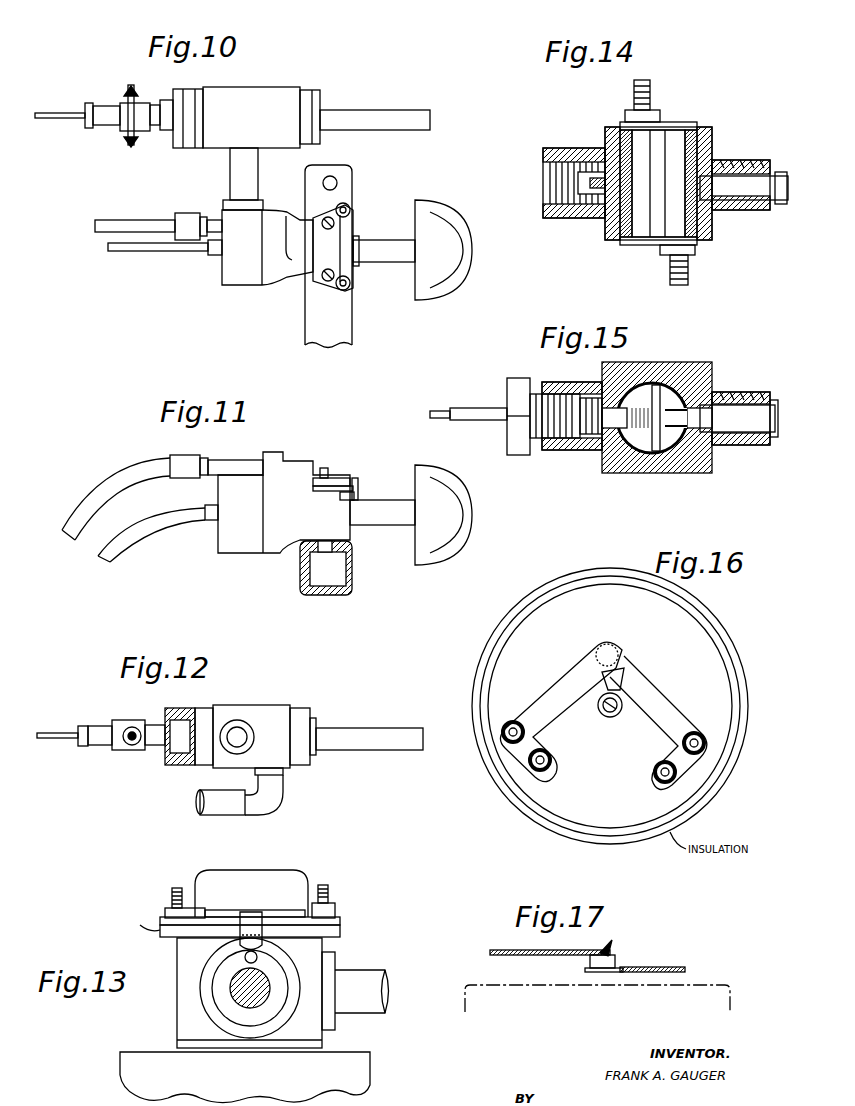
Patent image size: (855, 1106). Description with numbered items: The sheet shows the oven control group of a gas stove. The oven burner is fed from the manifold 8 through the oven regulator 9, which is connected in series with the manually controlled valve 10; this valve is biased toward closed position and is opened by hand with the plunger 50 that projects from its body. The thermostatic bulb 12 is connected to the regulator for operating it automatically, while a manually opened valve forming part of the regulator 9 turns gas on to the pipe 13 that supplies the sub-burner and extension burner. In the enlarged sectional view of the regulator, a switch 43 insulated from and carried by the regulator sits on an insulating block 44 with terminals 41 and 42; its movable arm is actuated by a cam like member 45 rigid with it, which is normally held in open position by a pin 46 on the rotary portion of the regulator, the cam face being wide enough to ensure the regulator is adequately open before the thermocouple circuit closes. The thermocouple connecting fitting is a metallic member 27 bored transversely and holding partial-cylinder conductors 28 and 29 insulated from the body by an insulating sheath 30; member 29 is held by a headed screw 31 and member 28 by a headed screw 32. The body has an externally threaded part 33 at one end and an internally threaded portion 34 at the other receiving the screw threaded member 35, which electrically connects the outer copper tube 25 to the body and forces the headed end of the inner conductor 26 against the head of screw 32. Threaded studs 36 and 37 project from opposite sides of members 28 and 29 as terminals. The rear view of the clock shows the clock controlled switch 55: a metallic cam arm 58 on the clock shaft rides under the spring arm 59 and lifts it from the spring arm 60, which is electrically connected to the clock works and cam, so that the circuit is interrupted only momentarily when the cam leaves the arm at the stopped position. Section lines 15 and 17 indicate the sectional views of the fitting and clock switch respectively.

In FIG. 10, the manifold 8 is at (340, 326).
In FIG. 10, the oven regulator 9 is at (273, 290).
In FIG. 11, the oven regulator 9 is at (268, 556).
In FIG. 13, the oven regulator 9 is at (175, 1010).
In FIG. 10, the manually controlled valve 10 is at (268, 92).
In FIG. 12, the manually controlled valve 10 is at (258, 706).
In FIG. 10, the thermostatic bulb 12 is at (62, 187).
In FIG. 10, the pipe 13 is at (137, 220).
In FIG. 11, the pipe 13 is at (108, 470).
In FIG. 14, the section line 15 is at (540, 181).
In FIG. 16, the section line 17 is at (690, 679).
In FIG. 15, the outer copper tube 25 is at (468, 406).
In FIG. 15, the conductor 26 is at (432, 411).
In FIG. 10, the metallic member 27 is at (126, 128).
In FIG. 12, the metallic member 27 is at (118, 752).
In FIG. 14, the metallic member 27 is at (712, 238).
In FIG. 15, the metallic member 27 is at (650, 362).
In FIG. 14, the partial cylinder conductor 28 is at (643, 228).
In FIG. 15, the partial cylinder conductor 28 is at (638, 472).
In FIG. 14, the partial cylinder conductor 29 is at (680, 145).
In FIG. 15, the partial cylinder conductor 29 is at (656, 455).
In FIG. 15, the insulating sheath 30 is at (672, 441).
In FIG. 14, the headed screw 31 is at (745, 192).
In FIG. 15, the headed screw 31 is at (738, 441).
In FIG. 14, the headed screw 32 is at (583, 220).
In FIG. 15, the headed screw 32 is at (585, 455).
In FIG. 15, the externally threaded part 33 is at (738, 394).
In FIG. 15, the internally threaded portion 34 is at (548, 456).
In FIG. 15, the screw threaded member 35 is at (517, 378).
In FIG. 14, the threaded stud 36 is at (650, 101).
In FIG. 14, the threaded stud 37 is at (690, 277).
In FIG. 13, the switch terminal 41 is at (324, 885).
In FIG. 13, the switch terminal 42 is at (178, 886).
In FIG. 10, the switch 43 is at (350, 237).
In FIG. 11, the switch 43 is at (350, 478).
In FIG. 13, the switch 43 is at (227, 918).
In FIG. 13, the insulating block 44 is at (340, 930).
In FIG. 11, the cam like member 45 is at (358, 489).
In FIG. 13, the cam like member 45 is at (250, 920).
In FIG. 11, the pin 46 is at (358, 500).
In FIG. 13, the pin 46 is at (257, 960).
In FIG. 10, the plunger 50 is at (383, 111).
In FIG. 12, the plunger 50 is at (370, 720).
In FIG. 16, the clock controlled switch 55 is at (620, 645).
In FIG. 16, the metallic cam arm 58 is at (625, 673).
In FIG. 17, the metallic cam arm 58 is at (614, 950).
In FIG. 16, the spring arm 59 is at (558, 704).
In FIG. 17, the spring arm 59 is at (528, 956).
In FIG. 16, the spring arm 60 is at (650, 706).
In FIG. 17, the spring arm 60 is at (660, 967).